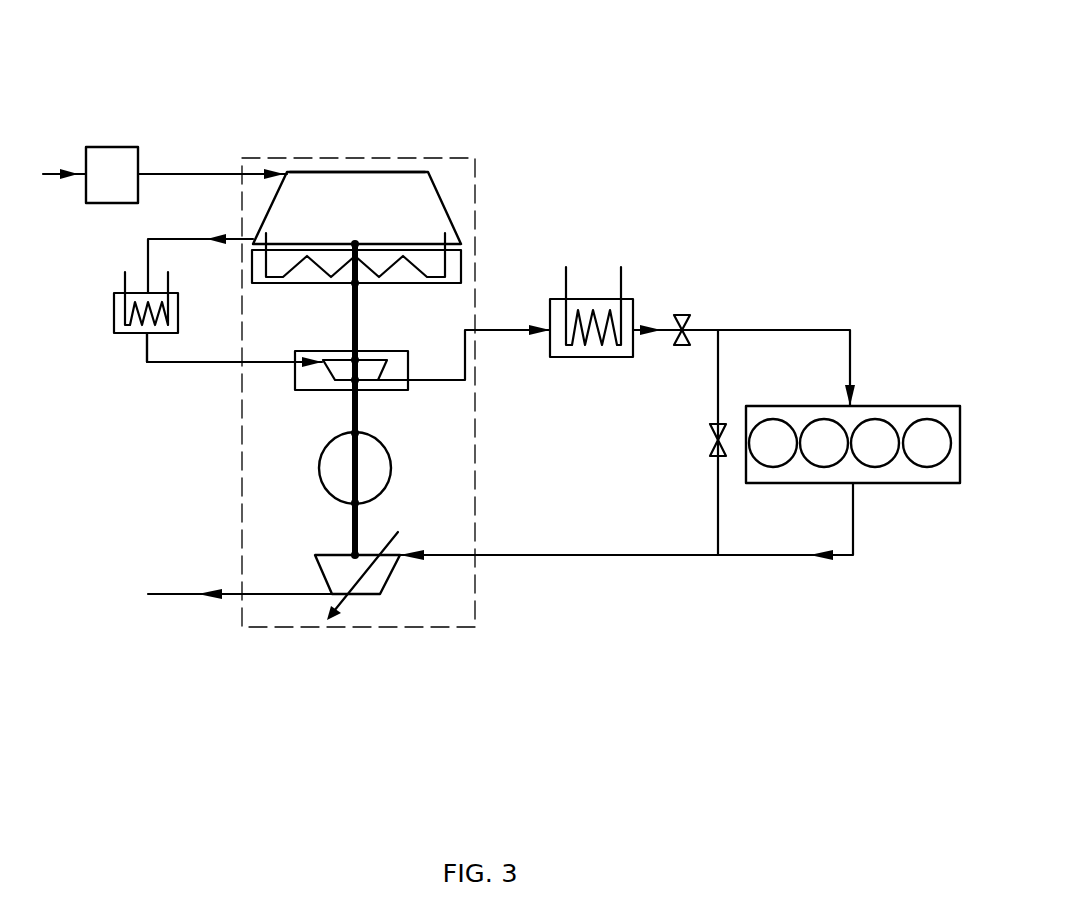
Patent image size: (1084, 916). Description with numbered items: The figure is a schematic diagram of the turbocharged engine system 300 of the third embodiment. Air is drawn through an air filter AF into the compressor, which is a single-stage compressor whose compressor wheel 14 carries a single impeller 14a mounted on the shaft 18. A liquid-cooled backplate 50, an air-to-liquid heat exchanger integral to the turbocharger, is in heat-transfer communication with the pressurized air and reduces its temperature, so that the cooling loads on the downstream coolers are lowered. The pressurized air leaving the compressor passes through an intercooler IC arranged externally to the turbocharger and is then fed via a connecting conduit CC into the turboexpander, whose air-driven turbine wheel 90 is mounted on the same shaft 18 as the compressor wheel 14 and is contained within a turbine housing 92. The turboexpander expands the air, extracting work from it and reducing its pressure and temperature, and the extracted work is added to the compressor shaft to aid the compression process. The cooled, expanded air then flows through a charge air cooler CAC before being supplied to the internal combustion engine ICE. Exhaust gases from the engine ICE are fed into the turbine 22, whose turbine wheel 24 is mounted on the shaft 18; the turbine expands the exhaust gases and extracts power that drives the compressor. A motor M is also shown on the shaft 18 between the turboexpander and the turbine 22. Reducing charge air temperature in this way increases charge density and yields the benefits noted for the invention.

The turbocharged engine system 300 is at (612, 140).
The compressor wheel 14 is at (316, 174).
The first impeller 14a is at (392, 180).
The liquid-cooled backplate 50 is at (458, 253).
The shaft 18 is at (350, 315).
The turbine housing 92 is at (313, 387).
The air-driven turbine wheel 90 is at (372, 377).
The electric motor M is at (322, 473).
The turbine 22 is at (399, 585).
The turbine wheel 24 is at (358, 588).
The air filter AF is at (108, 160).
The intercooler IC is at (115, 309).
The connecting conduit CC is at (208, 364).
The charge air cooler CAC is at (603, 350).
The internal combustion engine ICE is at (910, 405).